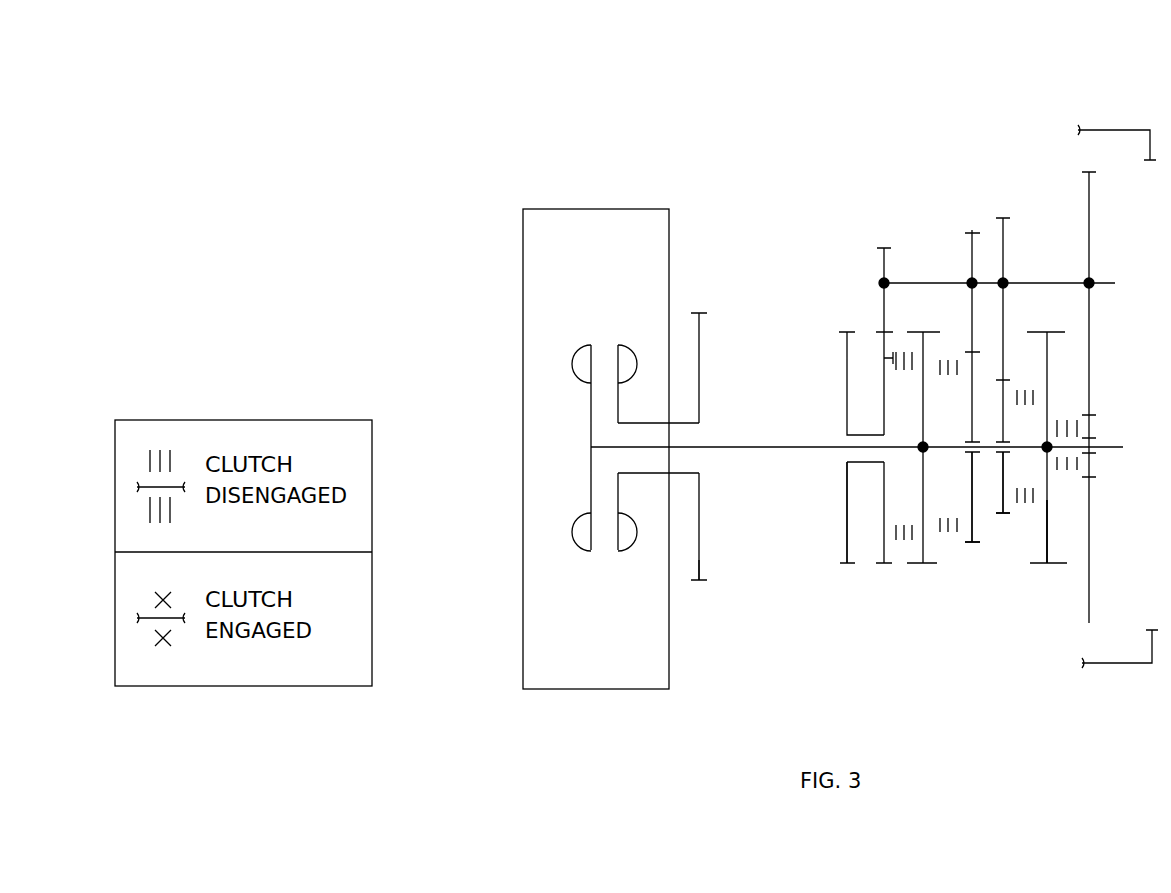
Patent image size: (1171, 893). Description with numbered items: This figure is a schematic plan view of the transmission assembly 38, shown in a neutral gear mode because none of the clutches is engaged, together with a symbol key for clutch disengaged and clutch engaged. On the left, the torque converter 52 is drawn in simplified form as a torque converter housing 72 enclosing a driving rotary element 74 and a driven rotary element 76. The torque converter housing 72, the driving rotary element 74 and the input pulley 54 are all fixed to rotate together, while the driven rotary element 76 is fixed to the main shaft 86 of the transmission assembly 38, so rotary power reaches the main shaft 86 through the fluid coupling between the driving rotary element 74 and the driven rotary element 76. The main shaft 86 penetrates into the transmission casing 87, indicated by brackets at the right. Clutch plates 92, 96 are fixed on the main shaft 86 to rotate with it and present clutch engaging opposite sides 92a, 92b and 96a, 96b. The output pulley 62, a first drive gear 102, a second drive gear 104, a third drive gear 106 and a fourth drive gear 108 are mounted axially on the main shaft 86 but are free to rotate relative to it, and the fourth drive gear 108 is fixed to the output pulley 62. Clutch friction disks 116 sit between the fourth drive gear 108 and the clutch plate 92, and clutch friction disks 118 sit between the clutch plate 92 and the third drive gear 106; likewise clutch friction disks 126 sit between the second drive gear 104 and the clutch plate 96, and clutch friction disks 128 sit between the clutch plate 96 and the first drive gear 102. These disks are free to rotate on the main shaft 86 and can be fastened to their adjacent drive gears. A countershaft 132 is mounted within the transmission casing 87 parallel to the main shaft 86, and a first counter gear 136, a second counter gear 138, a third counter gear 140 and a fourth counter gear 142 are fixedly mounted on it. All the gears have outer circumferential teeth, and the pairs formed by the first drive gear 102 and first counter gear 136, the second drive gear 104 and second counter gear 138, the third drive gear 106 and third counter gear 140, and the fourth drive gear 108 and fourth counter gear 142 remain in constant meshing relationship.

The transmission assembly 38 is at (761, 128).
The torque converter 52 is at (513, 258).
The input pulley 54 is at (699, 583).
The output pulley 62 is at (847, 537).
The torque converter housing 72 is at (523, 437).
The driving rotary element 74 is at (629, 350).
The driven rotary element 76 is at (580, 350).
The main shaft 86 is at (800, 447).
The transmission casing 87 is at (1111, 122).
The clutch plate 92 is at (921, 578).
The clutch engaging side 92a is at (920, 338).
The clutch engaging side 92b is at (925, 495).
The clutch plate 96 is at (1050, 578).
The clutch engaging side 96a is at (1040, 530).
The clutch engaging side 96b is at (1050, 518).
The first drive gear 102 is at (1094, 462).
The second drive gear 104 is at (1004, 515).
The third drive gear 106 is at (975, 545).
The fourth drive gear 108 is at (882, 568).
The clutch friction disks 116 is at (893, 358).
The clutch friction disks 118 is at (946, 352).
The clutch friction disks 126 is at (1030, 382).
The clutch friction disks 128 is at (1065, 418).
The countershaft 132 is at (920, 283).
The first counter gear 136 is at (1090, 228).
The second counter gear 138 is at (1004, 216).
The third counter gear 140 is at (972, 228).
The fourth counter gear 142 is at (884, 245).